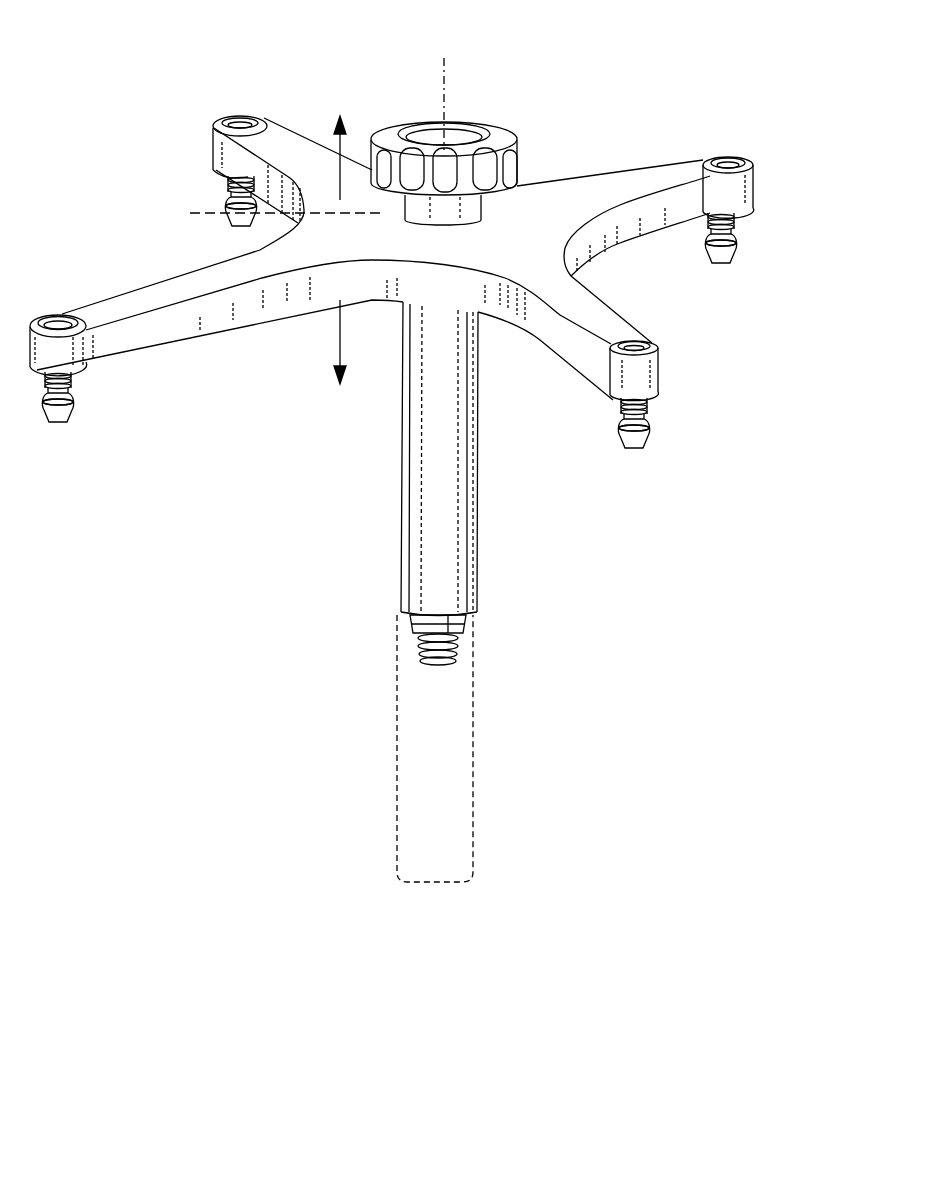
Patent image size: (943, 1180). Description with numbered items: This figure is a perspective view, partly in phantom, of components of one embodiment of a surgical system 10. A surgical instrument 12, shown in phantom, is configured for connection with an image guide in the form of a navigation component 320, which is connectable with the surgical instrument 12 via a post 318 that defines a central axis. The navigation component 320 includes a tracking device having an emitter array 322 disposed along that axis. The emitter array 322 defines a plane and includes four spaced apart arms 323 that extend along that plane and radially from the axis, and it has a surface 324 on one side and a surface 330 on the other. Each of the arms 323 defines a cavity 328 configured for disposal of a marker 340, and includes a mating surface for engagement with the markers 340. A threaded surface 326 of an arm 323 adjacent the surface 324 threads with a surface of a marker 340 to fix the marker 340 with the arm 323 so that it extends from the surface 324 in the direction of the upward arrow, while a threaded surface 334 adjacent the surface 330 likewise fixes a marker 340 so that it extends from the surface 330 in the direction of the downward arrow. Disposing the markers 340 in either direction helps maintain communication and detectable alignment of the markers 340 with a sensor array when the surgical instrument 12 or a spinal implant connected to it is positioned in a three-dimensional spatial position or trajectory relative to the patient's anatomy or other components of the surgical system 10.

The surgical system 10 is at (98, 32).
The surgical instrument 12 is at (326, 757).
The post 318 is at (478, 582).
The navigation component 320 is at (766, 124).
The emitter array 322 is at (772, 330).
The arms 323 is at (283, 127).
The surface 324 is at (553, 207).
The threaded surface 326 is at (658, 344).
The cavity 328 is at (660, 375).
The surface 330 is at (146, 355).
The threaded surface 334 is at (622, 408).
The markers 340 is at (736, 243).